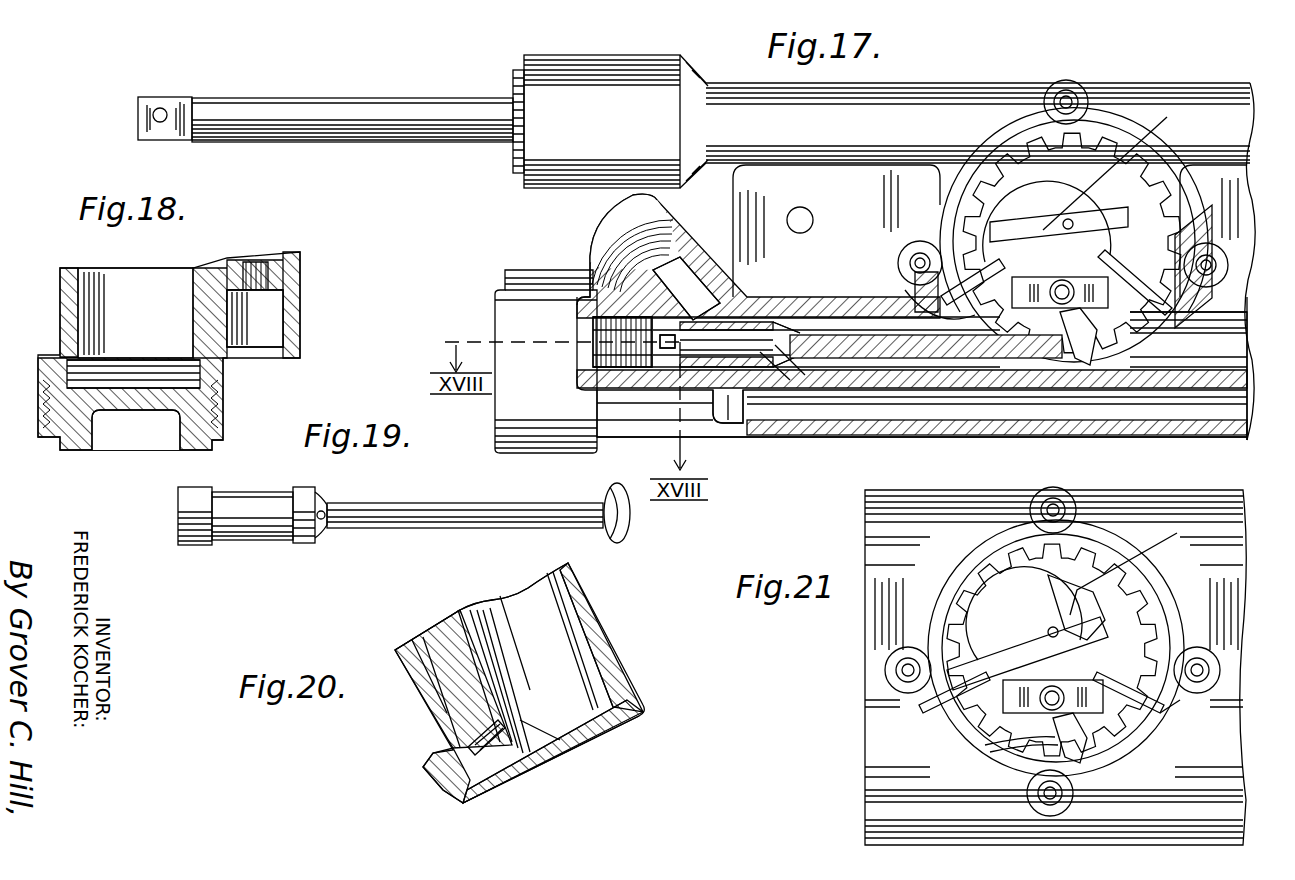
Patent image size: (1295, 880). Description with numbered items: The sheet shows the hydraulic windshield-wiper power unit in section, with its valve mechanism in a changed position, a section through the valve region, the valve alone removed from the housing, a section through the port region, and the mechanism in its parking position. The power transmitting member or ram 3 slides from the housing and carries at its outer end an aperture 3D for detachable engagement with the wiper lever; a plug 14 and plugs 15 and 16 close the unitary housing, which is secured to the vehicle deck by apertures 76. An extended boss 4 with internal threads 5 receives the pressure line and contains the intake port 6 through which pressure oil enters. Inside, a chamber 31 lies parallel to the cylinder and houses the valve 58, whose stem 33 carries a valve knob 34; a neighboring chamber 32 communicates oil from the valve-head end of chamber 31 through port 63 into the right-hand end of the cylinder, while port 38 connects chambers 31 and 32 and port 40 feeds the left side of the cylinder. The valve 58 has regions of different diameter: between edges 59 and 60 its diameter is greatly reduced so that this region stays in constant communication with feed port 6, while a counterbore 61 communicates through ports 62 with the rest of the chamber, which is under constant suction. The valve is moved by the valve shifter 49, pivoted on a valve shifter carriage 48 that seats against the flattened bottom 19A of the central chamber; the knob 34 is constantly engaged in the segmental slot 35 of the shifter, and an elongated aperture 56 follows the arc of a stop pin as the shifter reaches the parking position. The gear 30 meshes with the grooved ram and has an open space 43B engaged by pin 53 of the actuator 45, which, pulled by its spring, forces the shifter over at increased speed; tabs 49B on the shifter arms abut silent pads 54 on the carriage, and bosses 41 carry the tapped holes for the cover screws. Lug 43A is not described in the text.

In FIG. 17, the power transmitting member or ram 3 is at (322, 120).
In FIG. 17, the aperture 3D is at (175, 106).
In FIG. 17, the plug 14 is at (516, 82).
In FIG. 17, the extended boss 4 is at (612, 270).
In FIG. 17, the internal threads 5 is at (638, 235).
In FIG. 17, the intake port 6 is at (700, 290).
In FIG. 17, the apertures 76 is at (805, 228).
In FIG. 17, the gear 30 is at (1000, 168).
In FIG. 17, the chamber 31 is at (1188, 376).
In FIG. 17, the chamber 32 is at (1205, 410).
In FIG. 20, the chamber 32 is at (420, 662).
In FIG. 17, the stem 33 is at (840, 340).
In FIG. 19, the stem 33 is at (500, 512).
In FIG. 17, the valve knob 34 is at (1098, 345).
In FIG. 19, the valve knob 34 is at (622, 540).
In FIG. 21, the segmental slot 35 is at (985, 742).
In FIG. 17, the port 38 is at (775, 385).
In FIG. 17, the port 40 is at (615, 353).
In FIG. 18, the port 40 is at (200, 342).
In FIG. 17, the bosses 41 is at (1077, 88).
In FIG. 21, the bosses 41 is at (888, 680).
In FIG. 21, the mounting lug 43A is at (1010, 620).
In FIG. 17, the open space 43B is at (1015, 245).
In FIG. 21, the open space 43B is at (1120, 600).
In FIG. 17, the actuator 45 is at (1040, 220).
In FIG. 21, the actuator 45 is at (1052, 650).
In FIG. 17, the valve shifter carriage 48 is at (1065, 272).
In FIG. 21, the valve shifter carriage 48 is at (1060, 633).
In FIG. 17, the valve shifter 49 is at (1121, 167).
In FIG. 21, the valve shifter 49 is at (1126, 576).
In FIG. 17, the tab 49B is at (960, 285).
In FIG. 21, the tab 49B is at (1123, 637).
In FIG. 17, the pin 53 is at (1005, 235).
In FIG. 21, the silent pads 54 is at (1167, 703).
In FIG. 17, the elongated aperture 56 is at (1059, 224).
In FIG. 21, the elongated aperture 56 is at (1027, 653).
In FIG. 17, the valve 58 is at (730, 428).
In FIG. 19, the valve 58 is at (258, 512).
In FIG. 19, the edge 59 is at (215, 540).
In FIG. 19, the edge 60 is at (305, 545).
In FIG. 17, the counterbore 61 is at (730, 343).
In FIG. 17, the ports 62 is at (795, 330).
In FIG. 19, the ports 62 is at (330, 525).
In FIG. 20, the port 63 is at (470, 742).
In FIG. 18, the plug 15 is at (150, 428).
In FIG. 20, the plug 16 is at (480, 786).
In FIG. 21, the flattened bottom 19A is at (1015, 800).